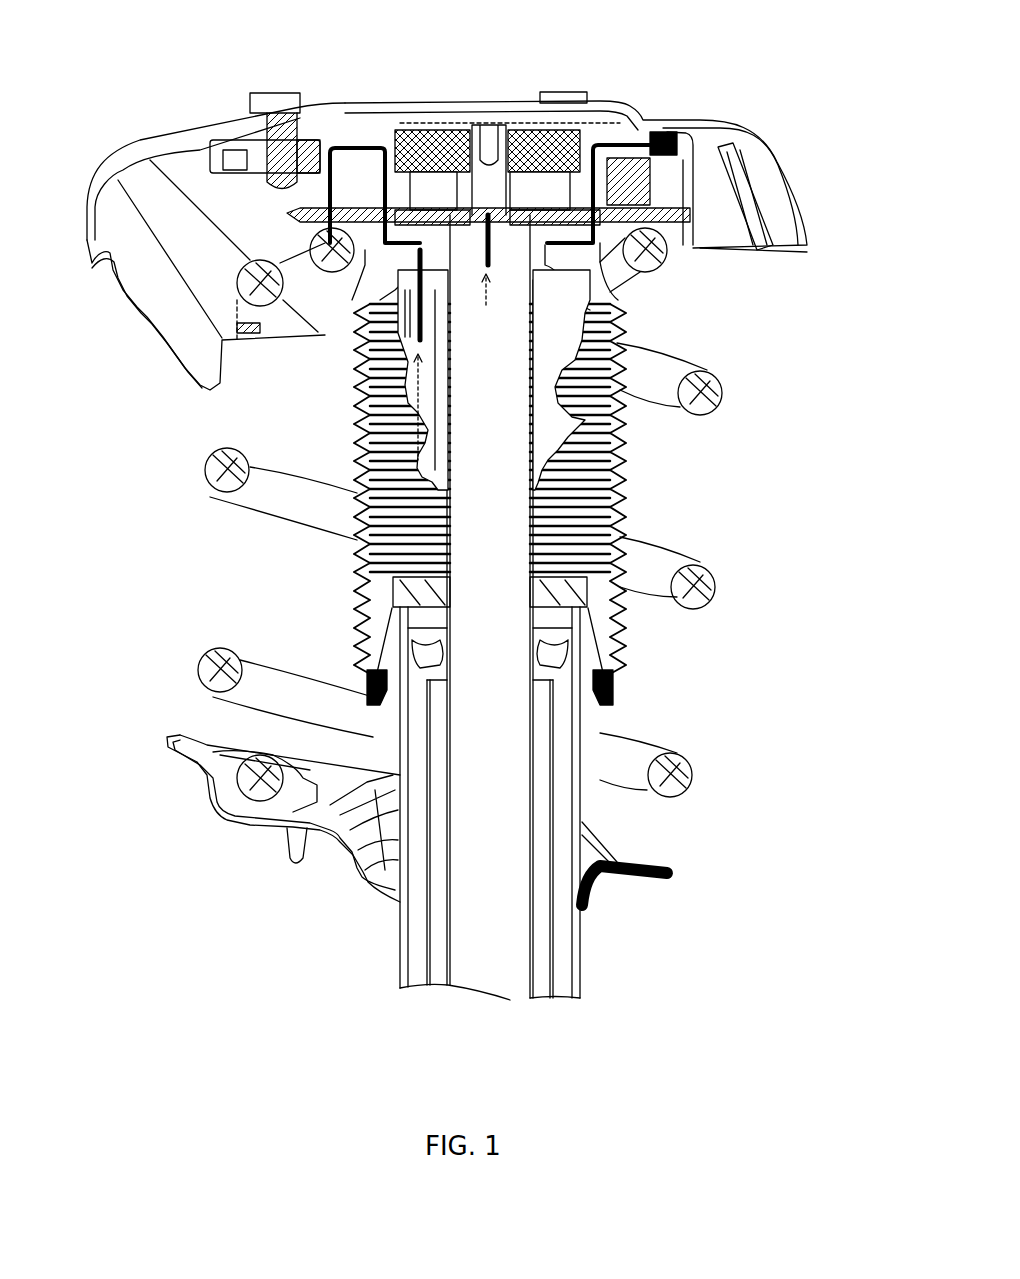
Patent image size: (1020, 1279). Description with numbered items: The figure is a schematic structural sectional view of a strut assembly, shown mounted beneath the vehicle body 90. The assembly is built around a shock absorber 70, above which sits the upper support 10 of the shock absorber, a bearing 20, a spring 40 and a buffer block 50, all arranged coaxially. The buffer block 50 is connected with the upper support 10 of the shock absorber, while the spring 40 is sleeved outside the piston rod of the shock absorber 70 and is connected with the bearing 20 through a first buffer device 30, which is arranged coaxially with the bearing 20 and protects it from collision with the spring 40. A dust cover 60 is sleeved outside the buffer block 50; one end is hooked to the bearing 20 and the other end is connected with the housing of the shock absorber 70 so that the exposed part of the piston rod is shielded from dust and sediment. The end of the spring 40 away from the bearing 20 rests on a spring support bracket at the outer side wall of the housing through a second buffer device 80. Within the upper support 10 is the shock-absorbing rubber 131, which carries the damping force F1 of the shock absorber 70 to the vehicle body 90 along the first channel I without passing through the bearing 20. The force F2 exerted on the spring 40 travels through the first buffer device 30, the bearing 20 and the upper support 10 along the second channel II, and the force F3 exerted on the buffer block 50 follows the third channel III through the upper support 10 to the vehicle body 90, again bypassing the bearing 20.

The upper support of the shock absorber 10 is at (640, 122).
The bearing 20 is at (610, 190).
The first buffer device 30 is at (660, 222).
The spring 40 is at (660, 253).
The buffer block 50 is at (620, 423).
The dust cover 60 is at (620, 513).
The shock absorber 70 is at (600, 693).
The second buffer device 80 is at (207, 787).
The vehicle body 90 is at (148, 140).
The shock-absorbing rubber 131 is at (572, 150).
The damping force F1 is at (490, 561).
The force exerted on the spring F2 is at (367, 355).
The force exerted on the buffer block F3 is at (356, 455).
The first channel I is at (440, 170).
The second channel II is at (253, 120).
The third channel III is at (430, 160).